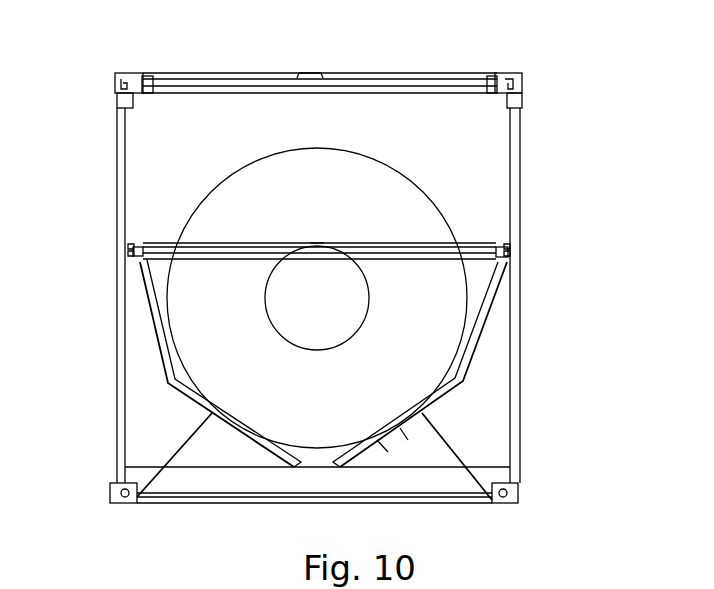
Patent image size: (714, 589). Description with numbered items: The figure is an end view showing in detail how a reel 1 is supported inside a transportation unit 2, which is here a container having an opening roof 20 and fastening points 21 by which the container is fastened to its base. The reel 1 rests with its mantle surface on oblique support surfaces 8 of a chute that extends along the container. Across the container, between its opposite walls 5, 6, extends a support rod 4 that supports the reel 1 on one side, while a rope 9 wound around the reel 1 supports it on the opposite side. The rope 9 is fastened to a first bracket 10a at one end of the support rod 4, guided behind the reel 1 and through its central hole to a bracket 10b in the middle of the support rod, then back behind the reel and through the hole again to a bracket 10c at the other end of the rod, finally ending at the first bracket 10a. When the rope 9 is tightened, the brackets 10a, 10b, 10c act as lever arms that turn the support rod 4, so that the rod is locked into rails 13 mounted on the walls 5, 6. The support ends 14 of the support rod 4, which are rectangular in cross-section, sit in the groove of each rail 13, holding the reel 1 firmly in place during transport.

The reel 1 is at (325, 163).
The transportation unit 2 is at (192, 76).
The support rod 4 is at (157, 262).
The wall 5 is at (518, 347).
The wall 6 is at (118, 346).
The oblique support surface 8 is at (445, 400).
The rope 9 is at (383, 243).
The first bracket 10a is at (500, 243).
The bracket 10b is at (130, 243).
The bracket 10c is at (317, 243).
The rail 13 is at (130, 248).
The support end 14 is at (130, 253).
The opening roof 20 is at (450, 78).
The fastening point 21 is at (130, 493).